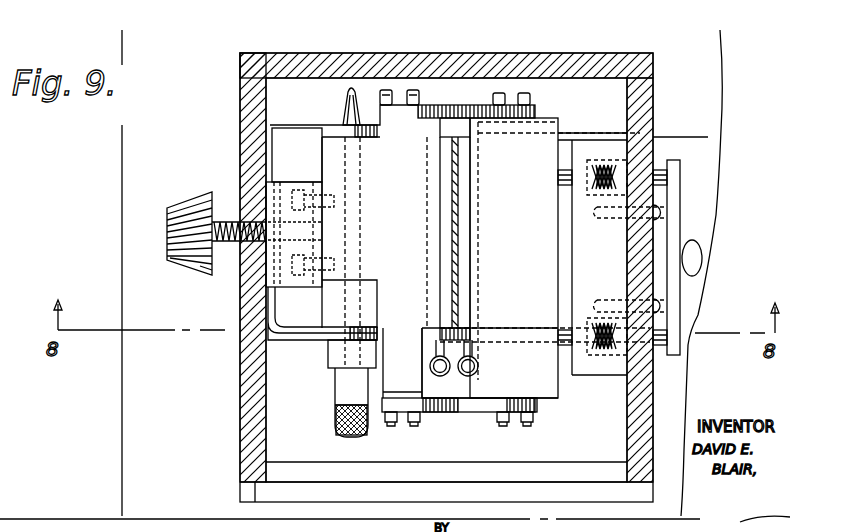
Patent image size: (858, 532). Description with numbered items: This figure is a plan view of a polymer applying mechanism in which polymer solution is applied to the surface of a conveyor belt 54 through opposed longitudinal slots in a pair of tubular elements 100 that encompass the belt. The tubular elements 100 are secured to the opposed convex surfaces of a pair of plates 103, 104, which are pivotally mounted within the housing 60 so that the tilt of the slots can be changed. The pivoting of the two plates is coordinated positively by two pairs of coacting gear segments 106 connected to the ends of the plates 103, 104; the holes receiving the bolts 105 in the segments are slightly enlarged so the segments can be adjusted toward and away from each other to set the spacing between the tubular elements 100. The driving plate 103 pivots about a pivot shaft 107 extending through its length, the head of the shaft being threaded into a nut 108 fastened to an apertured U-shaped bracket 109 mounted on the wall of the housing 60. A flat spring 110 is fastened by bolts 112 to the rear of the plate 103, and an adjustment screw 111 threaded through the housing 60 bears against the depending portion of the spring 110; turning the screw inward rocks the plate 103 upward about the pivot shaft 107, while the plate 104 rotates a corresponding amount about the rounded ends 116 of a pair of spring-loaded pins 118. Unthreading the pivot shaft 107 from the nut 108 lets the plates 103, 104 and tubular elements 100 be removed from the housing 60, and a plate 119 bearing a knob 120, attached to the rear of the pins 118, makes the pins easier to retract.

The conveyor belt 54 is at (680, 141).
The housing 60 is at (243, 473).
The tubular elements 100 is at (490, 365).
The driving plate 103 is at (422, 244).
The plate 104 is at (555, 253).
The bolts 105 is at (412, 425).
The gear segments 106 is at (474, 108).
The pivot shaft 107 is at (363, 316).
The nut 108 is at (330, 373).
The U-shaped bracket 109 is at (268, 345).
The flat spring 110 is at (262, 302).
The adjustment screw 111 is at (182, 208).
The bolts 112 is at (293, 183).
The rounded ends 116 is at (560, 180).
The spring-loaded pins 118 is at (560, 190).
The plate 119 is at (668, 210).
The knob 120 is at (697, 258).